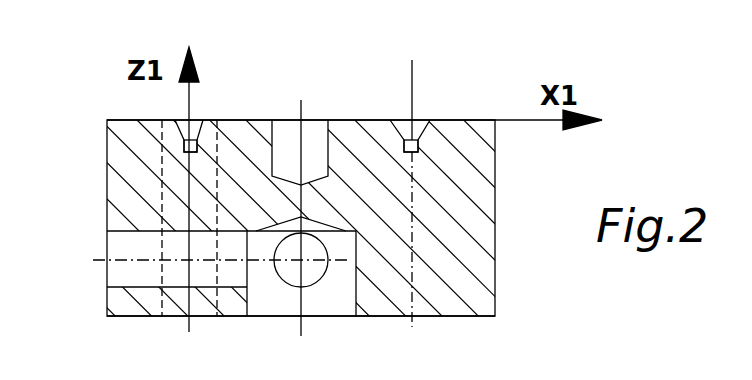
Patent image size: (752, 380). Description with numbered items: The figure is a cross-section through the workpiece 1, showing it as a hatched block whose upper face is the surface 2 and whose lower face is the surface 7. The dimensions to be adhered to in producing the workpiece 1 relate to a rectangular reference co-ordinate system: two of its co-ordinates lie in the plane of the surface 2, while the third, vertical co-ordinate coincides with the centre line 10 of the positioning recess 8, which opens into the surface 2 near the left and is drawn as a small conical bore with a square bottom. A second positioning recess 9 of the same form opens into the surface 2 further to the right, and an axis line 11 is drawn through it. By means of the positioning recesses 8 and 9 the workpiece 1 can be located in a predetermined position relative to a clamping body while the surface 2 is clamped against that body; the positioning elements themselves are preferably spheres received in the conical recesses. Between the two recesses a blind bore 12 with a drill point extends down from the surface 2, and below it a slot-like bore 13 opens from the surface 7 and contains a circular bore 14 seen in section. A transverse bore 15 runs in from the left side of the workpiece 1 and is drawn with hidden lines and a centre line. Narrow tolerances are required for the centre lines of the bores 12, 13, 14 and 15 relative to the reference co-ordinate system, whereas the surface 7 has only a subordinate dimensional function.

The workpiece 1 is at (482, 275).
The surface 2 is at (450, 122).
The surface 7 is at (450, 316).
The positioning recess 8 is at (196, 122).
The positioning recess 9 is at (417, 130).
The centre line 10 is at (190, 93).
The bore axis line 11 is at (412, 72).
The bore 12 is at (307, 137).
The bore 13 is at (331, 297).
The bore 14 is at (289, 269).
The bore 15 is at (130, 272).